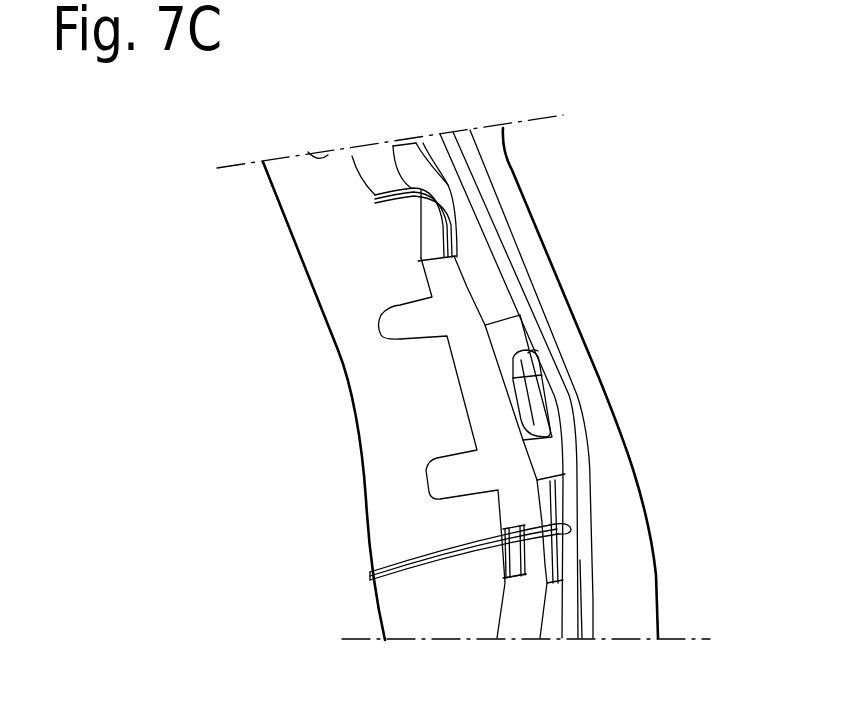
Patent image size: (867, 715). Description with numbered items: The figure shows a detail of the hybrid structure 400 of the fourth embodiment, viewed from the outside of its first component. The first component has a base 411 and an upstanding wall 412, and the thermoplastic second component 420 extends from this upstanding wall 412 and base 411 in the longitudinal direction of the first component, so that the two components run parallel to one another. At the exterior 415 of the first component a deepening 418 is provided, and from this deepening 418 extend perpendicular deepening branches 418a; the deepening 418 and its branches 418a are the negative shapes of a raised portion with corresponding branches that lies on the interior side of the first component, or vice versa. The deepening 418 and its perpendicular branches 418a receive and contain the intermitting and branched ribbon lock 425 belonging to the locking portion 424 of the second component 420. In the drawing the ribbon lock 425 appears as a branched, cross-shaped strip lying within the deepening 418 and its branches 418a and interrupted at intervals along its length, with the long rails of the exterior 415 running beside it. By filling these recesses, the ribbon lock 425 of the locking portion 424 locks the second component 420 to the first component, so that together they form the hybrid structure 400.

The hybrid structure 400 is at (605, 325).
The base 411 is at (550, 507).
The upstanding wall 412 is at (580, 582).
The exterior 415 is at (467, 265).
The deepening 418 is at (418, 224).
The perpendicular deepening branches 418a is at (497, 275).
The thermoplastic second component 420 is at (540, 460).
The locking portion 424 is at (483, 395).
The ribbon lock 425 is at (368, 158).